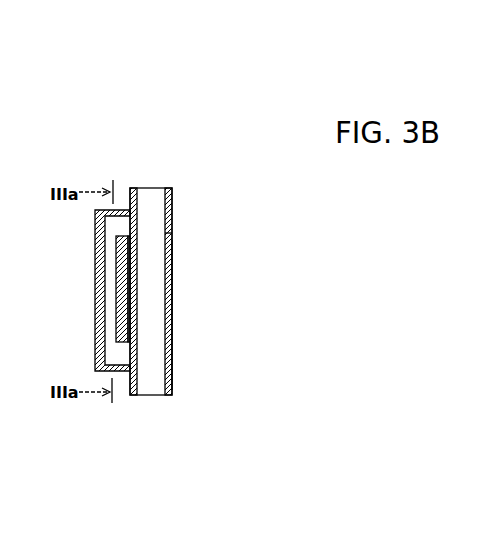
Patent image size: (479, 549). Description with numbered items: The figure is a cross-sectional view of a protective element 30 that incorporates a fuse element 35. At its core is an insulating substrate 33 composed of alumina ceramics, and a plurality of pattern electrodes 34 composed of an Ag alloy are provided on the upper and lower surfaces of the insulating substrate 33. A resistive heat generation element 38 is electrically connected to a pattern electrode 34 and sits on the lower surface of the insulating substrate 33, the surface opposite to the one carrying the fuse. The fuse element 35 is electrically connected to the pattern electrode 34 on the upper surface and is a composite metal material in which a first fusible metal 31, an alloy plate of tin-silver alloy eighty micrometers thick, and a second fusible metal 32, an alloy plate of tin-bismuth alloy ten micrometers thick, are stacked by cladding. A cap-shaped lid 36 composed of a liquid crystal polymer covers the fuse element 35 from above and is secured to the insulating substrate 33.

The protective element 30 is at (79, 131).
The first fusible metal 31 is at (118, 372).
The second fusible metal 32 is at (130, 345).
The insulating substrate 33 is at (148, 205).
The pattern electrode 34 is at (133, 190).
The fuse element 35 is at (160, 464).
The cap-shaped lid 36 is at (95, 272).
The resistive heat generation element 38 is at (170, 287).